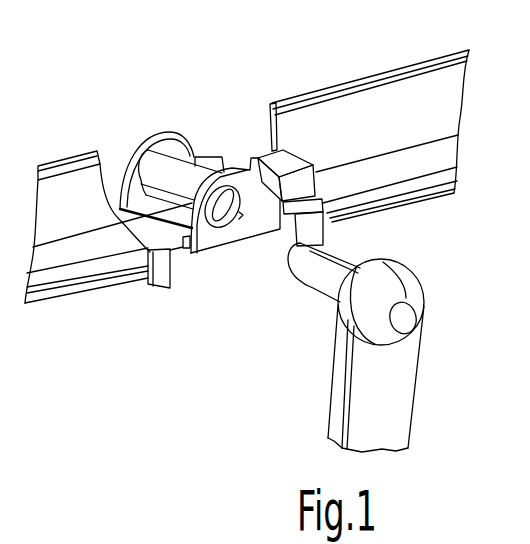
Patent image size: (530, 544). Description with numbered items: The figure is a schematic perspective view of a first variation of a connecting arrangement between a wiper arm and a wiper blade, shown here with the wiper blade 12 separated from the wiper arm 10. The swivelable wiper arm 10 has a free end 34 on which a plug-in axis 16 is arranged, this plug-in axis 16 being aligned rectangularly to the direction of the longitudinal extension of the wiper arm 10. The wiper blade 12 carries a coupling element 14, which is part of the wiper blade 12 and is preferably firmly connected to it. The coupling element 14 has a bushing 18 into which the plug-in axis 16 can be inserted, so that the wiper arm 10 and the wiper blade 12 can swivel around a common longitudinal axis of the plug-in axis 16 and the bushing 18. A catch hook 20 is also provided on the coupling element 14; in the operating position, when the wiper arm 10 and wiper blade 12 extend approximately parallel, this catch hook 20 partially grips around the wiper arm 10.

The wiper arm 10 is at (340, 378).
The wiper blade 12 is at (93, 283).
The coupling element 14 is at (202, 235).
The plug-in axis 16 is at (333, 273).
The bushing 18 is at (158, 168).
The catch hook 20 is at (288, 160).
The free end 34 is at (342, 337).